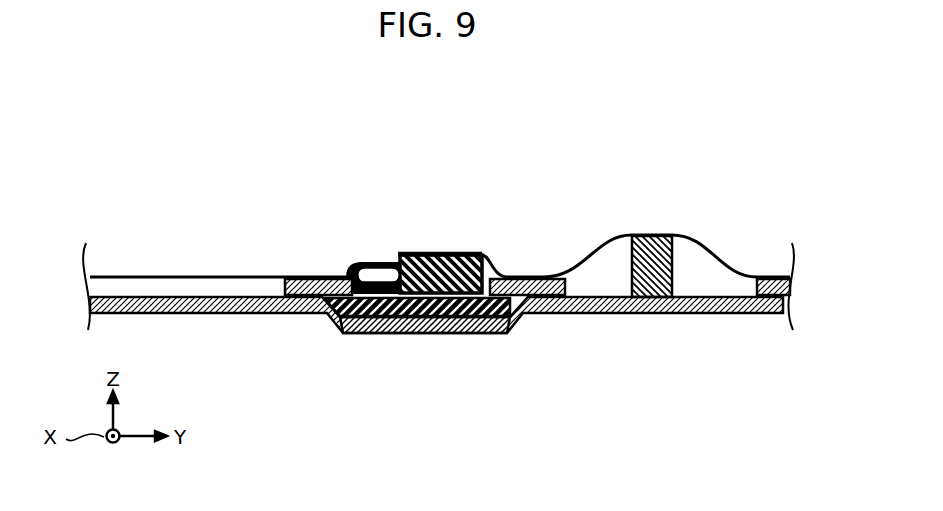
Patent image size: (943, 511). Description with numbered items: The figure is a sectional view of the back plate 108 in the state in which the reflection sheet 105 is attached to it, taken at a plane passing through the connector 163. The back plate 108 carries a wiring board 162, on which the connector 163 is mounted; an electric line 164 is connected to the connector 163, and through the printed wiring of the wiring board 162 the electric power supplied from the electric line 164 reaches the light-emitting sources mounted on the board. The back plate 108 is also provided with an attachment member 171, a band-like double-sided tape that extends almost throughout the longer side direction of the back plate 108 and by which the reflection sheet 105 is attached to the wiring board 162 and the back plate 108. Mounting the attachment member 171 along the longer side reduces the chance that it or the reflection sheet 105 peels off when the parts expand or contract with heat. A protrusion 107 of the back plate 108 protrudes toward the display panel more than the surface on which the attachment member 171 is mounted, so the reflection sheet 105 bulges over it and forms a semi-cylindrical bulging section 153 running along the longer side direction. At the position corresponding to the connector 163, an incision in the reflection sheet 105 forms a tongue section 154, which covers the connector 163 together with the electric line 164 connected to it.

The reflection sheet 105 is at (155, 277).
The protrusion 107 is at (652, 280).
The back plate 108 is at (592, 305).
The bulging section 153 is at (647, 233).
The tongue section 154 is at (380, 260).
The wiring board 162 is at (413, 305).
The connector 163 is at (468, 305).
The electric line 164 is at (386, 272).
The attachment member 171 is at (290, 313).